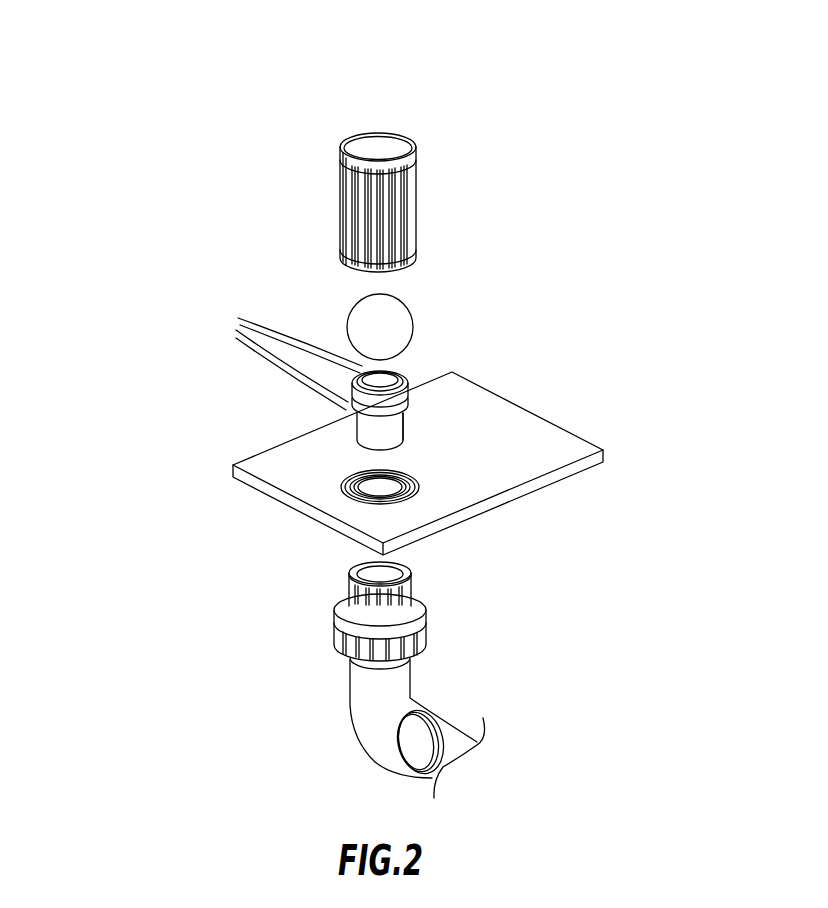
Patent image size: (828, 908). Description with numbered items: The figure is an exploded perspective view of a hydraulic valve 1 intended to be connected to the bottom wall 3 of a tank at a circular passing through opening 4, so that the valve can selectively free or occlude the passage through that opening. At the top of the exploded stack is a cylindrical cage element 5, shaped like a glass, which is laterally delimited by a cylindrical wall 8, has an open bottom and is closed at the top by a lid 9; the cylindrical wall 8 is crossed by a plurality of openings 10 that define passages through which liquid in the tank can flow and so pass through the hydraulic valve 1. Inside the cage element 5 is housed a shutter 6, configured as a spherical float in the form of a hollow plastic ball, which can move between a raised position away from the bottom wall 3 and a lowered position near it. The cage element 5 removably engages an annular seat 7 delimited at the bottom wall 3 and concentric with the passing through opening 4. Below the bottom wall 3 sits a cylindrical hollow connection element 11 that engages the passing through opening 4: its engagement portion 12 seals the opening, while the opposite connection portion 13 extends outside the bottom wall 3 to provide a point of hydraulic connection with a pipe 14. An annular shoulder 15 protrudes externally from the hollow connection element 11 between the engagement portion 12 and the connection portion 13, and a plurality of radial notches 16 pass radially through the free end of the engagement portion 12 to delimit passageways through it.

The hydraulic valve 1 is at (138, 263).
The bottom wall 3 is at (454, 464).
The passing through opening 4 is at (376, 486).
The cage element 5 is at (385, 172).
The shutter 6 is at (395, 318).
The annular seat 7 is at (420, 488).
The cylindrical wall 8 is at (342, 208).
The lid 9 is at (374, 148).
The openings 10 is at (400, 246).
The hollow connection element 11 is at (381, 403).
The engagement portion 12 is at (406, 380).
The connection portion 13 is at (356, 444).
The pipe 14 is at (338, 709).
The shoulder 15 is at (406, 434).
The radial notches 16 is at (285, 356).